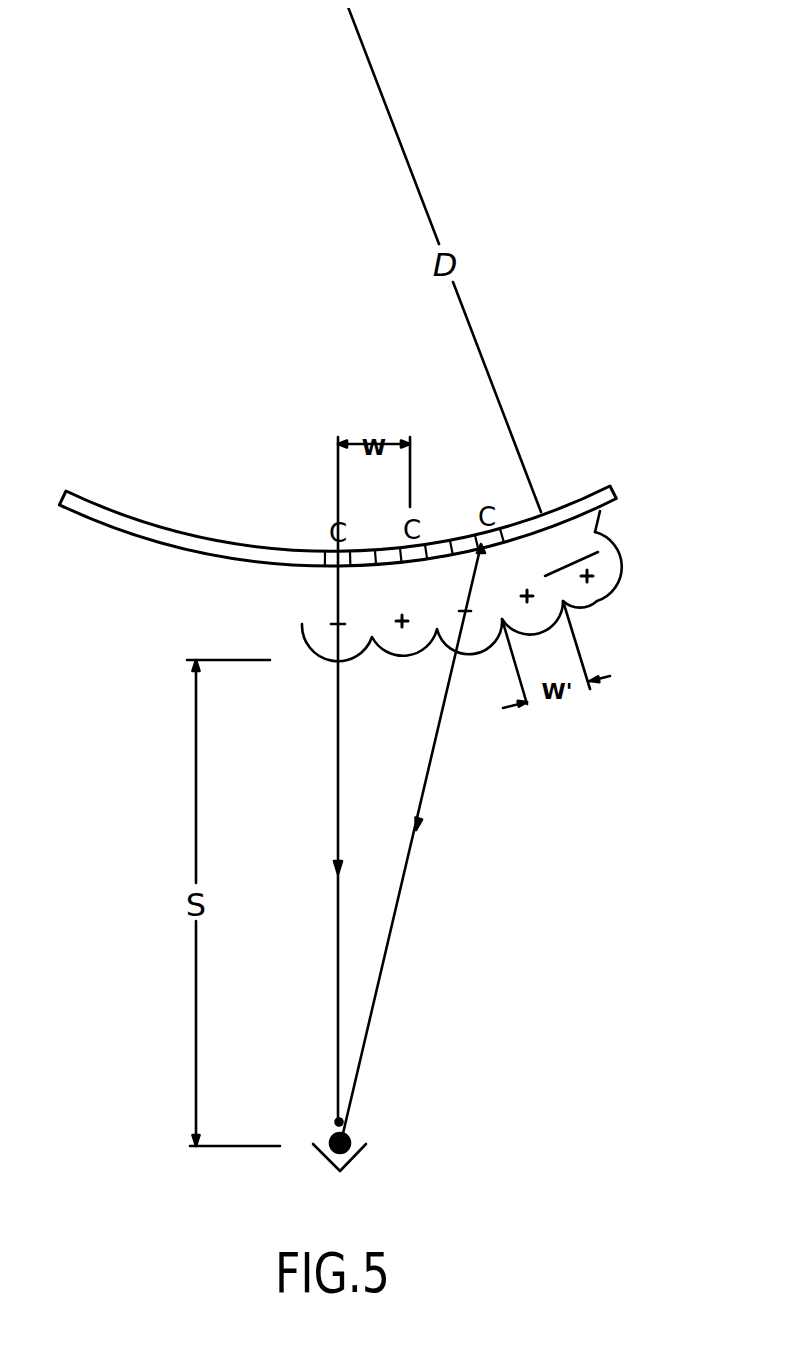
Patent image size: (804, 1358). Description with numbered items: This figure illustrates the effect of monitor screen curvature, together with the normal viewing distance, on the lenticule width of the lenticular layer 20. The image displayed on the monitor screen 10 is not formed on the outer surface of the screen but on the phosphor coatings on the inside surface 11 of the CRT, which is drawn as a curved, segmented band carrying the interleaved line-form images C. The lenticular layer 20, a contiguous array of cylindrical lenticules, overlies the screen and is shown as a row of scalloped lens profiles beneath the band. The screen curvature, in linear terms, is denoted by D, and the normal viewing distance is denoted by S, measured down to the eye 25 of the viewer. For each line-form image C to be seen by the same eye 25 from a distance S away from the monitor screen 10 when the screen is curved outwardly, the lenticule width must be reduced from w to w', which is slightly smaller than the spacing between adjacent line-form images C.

The monitor screen 10 is at (595, 533).
The inside surface 11 is at (158, 529).
The lenticular layer 20 is at (597, 602).
The eye 25 is at (357, 1143).